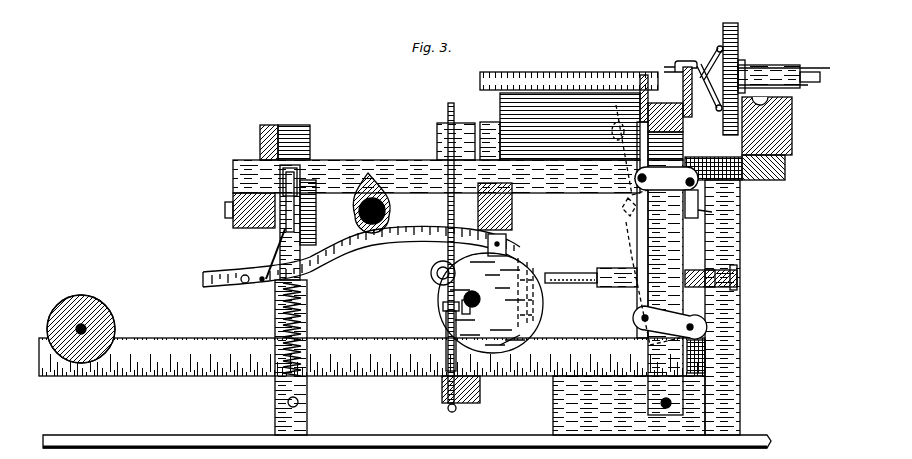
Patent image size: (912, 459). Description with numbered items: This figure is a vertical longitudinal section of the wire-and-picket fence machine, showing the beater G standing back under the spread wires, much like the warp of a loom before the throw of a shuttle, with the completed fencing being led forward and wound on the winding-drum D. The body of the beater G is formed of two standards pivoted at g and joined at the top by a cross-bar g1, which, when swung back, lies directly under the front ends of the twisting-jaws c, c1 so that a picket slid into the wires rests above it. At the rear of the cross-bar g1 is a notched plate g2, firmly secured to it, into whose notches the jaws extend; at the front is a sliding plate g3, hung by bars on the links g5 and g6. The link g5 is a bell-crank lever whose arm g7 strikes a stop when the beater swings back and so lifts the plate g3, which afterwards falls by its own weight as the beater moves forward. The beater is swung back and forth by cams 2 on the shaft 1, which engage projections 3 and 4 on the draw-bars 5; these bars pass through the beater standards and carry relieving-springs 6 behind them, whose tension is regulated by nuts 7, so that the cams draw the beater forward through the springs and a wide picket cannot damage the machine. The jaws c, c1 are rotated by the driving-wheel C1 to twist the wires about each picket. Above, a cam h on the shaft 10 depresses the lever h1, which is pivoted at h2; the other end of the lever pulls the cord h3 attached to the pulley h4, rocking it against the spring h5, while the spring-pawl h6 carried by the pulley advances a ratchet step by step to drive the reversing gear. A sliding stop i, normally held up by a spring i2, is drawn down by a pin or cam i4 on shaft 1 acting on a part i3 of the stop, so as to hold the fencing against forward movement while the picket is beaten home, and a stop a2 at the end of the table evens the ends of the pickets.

The winding-drum D is at (90, 311).
The spring-pawl h6 is at (237, 184).
The pulley h4 is at (282, 230).
The cord h3 is at (268, 254).
The spring h5 is at (302, 320).
The lever h1 is at (361, 256).
The cam h is at (381, 203).
The shaft 10 is at (385, 214).
The pivot h2 is at (506, 238).
The sliding stop i is at (455, 253).
The spring i2 is at (446, 318).
The clamp i3 is at (443, 307).
The pin or cam i4 is at (469, 314).
The shaft 1 is at (480, 302).
The cam 2 is at (510, 347).
The projection 3 is at (437, 273).
The projection 4 is at (527, 294).
The draw-bar 5 is at (591, 271).
The relieving-spring 6 is at (711, 285).
The nut 7 is at (738, 274).
The stop a2 is at (569, 71).
The twisting-jaw c is at (680, 80).
The driving-wheel C1 is at (745, 15).
The twisting-jaw c1 is at (710, 78).
The pivot g is at (665, 394).
The cross-bar g1 is at (665, 146).
The notched plate g2 is at (626, 212).
The sliding plate g3 is at (618, 150).
The link g5 is at (666, 178).
The link g6 is at (670, 322).
The arm g7 is at (696, 218).
The beater G is at (665, 259).